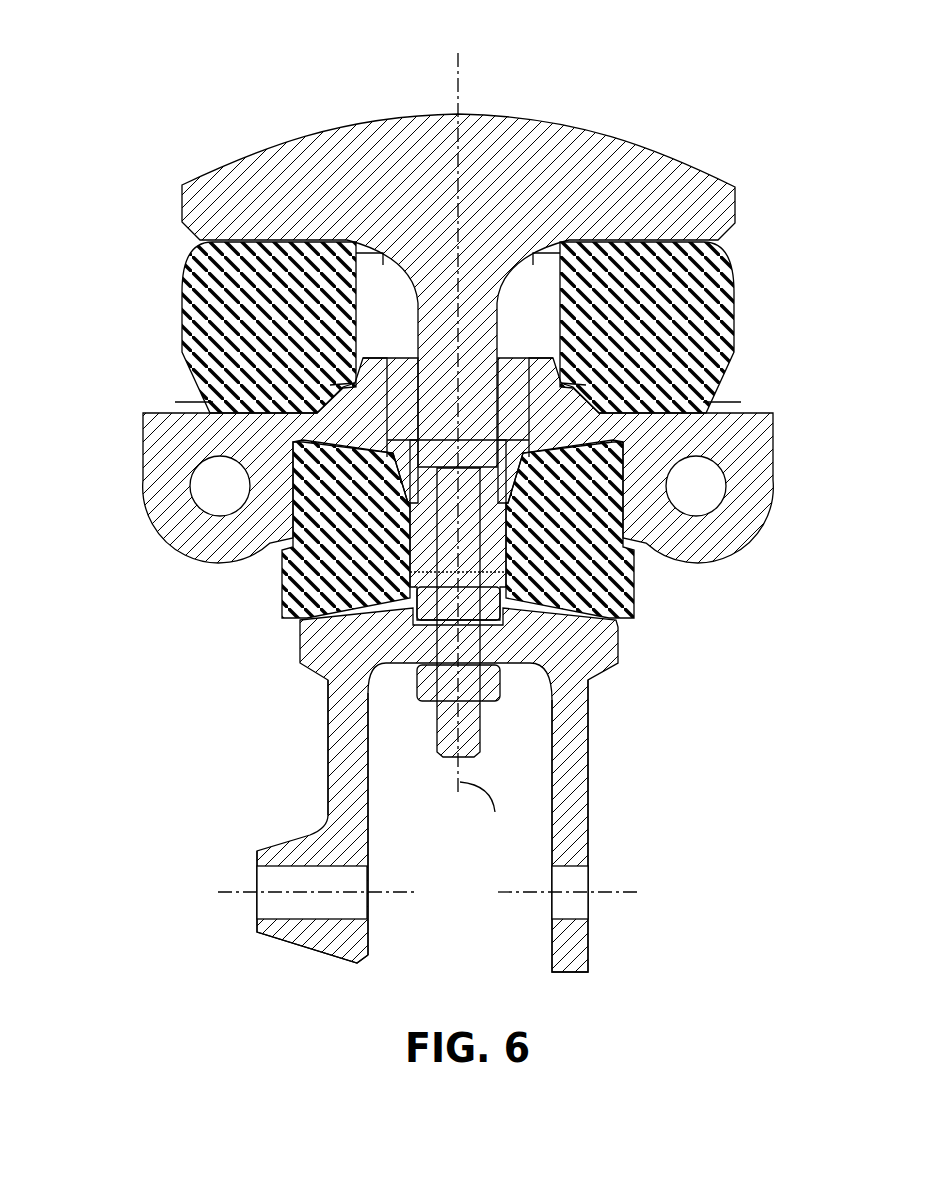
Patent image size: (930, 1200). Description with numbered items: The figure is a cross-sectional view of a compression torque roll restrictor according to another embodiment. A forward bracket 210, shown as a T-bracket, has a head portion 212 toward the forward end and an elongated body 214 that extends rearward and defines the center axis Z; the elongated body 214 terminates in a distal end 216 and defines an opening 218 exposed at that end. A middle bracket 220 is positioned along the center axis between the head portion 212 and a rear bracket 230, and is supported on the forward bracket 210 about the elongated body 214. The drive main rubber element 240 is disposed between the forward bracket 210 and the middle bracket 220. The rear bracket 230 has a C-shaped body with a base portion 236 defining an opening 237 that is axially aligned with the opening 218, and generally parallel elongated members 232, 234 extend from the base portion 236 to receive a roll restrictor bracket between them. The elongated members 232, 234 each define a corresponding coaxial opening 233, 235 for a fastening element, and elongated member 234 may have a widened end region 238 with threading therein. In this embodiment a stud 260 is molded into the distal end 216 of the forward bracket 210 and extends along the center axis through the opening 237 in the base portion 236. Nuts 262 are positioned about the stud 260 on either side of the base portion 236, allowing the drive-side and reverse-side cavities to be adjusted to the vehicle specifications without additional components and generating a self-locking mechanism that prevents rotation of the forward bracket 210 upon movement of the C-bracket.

The forward bracket 210 is at (255, 73).
The head portion 212 is at (218, 204).
The elongated body 214 is at (463, 97).
The distal end 216 is at (702, 410).
The opening 218 is at (482, 518).
The middle bracket 220 is at (143, 448).
The rear bracket 230 is at (300, 742).
The elongated member 232 is at (568, 842).
The opening 233 is at (568, 907).
The elongated member 234 is at (348, 813).
The opening 235 is at (267, 906).
The base portion 236 is at (600, 652).
The opening 237 is at (505, 600).
The widened end region 238 is at (308, 948).
The drive main rubber element 240 is at (178, 333).
The stud 260 is at (440, 737).
The nuts 262 is at (413, 602).